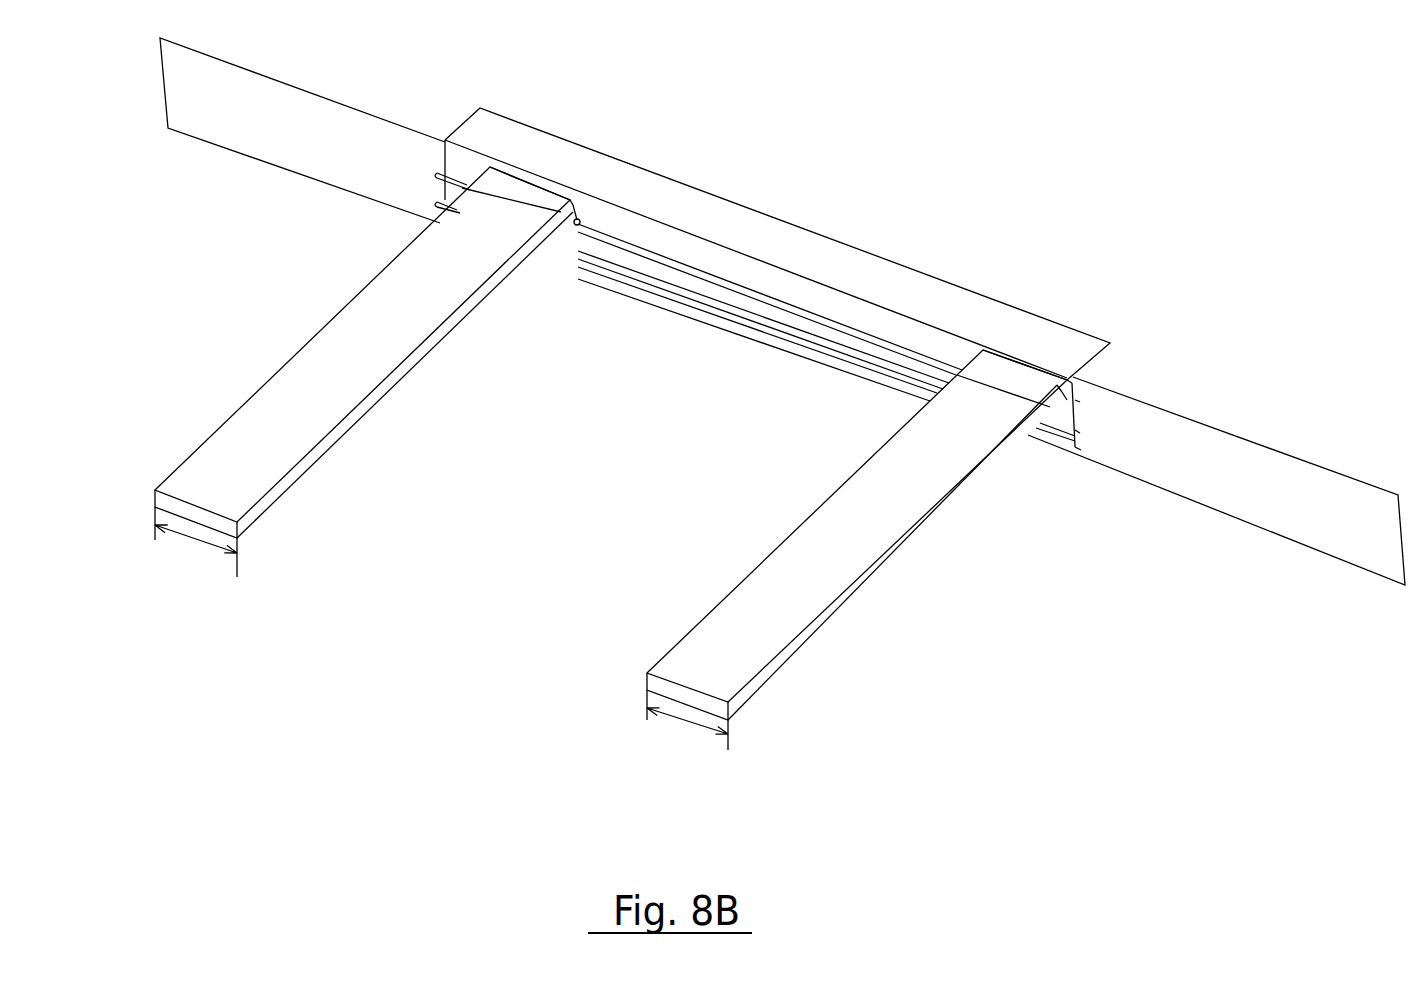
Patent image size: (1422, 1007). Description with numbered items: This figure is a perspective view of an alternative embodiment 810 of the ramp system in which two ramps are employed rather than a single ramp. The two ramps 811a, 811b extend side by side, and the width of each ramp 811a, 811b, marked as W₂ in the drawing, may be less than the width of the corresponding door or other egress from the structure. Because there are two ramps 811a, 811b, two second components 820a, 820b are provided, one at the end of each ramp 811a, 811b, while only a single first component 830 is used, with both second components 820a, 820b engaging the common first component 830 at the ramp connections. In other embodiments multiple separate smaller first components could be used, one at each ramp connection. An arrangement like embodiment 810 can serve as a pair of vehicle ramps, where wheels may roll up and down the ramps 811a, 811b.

The alternative embodiment 810 is at (911, 157).
The ramp 811a is at (848, 607).
The ramp 811b is at (273, 375).
The second component 820a is at (1040, 367).
The second component 820b is at (558, 190).
The first component 830 is at (920, 268).